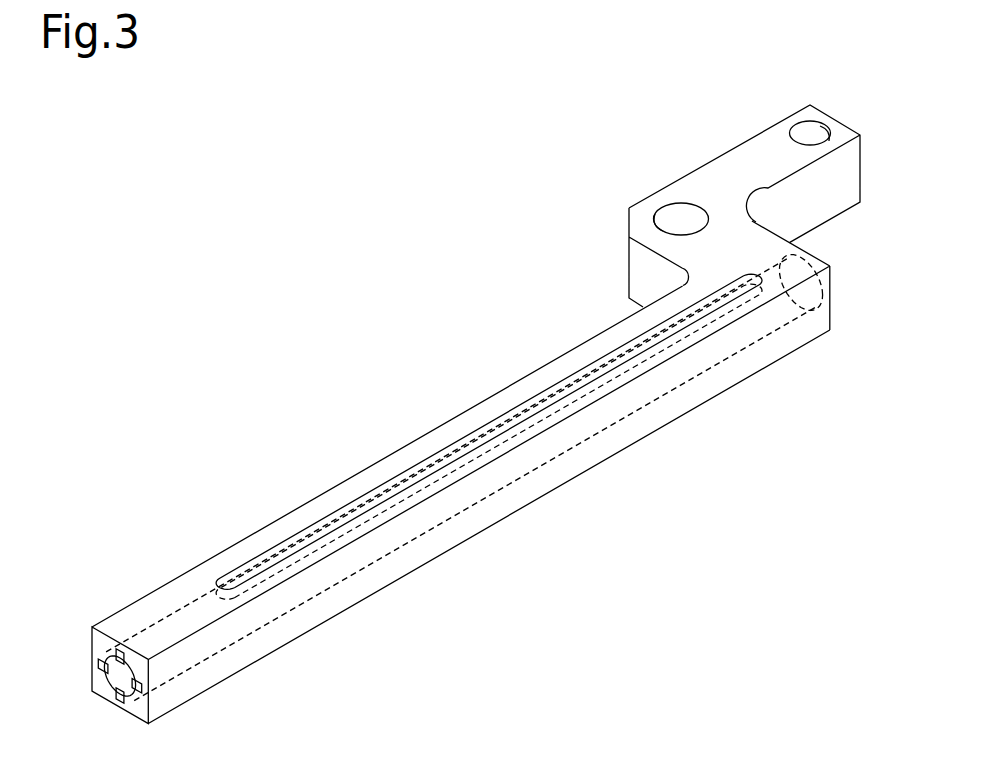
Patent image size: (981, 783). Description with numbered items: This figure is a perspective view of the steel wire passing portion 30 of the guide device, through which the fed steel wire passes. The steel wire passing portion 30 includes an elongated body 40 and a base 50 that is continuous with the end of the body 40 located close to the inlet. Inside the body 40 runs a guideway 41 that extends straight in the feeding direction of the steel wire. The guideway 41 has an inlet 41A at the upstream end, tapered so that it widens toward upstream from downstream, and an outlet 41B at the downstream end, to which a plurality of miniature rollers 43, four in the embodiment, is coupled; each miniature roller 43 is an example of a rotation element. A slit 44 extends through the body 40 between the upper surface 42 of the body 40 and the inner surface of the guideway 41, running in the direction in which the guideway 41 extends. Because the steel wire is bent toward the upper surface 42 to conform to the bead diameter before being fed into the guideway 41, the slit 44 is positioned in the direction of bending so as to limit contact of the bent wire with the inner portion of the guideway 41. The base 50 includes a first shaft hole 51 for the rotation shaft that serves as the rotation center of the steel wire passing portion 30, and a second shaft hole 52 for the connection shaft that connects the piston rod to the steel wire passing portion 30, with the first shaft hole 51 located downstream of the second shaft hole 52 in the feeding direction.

The steel wire passing portion 30 is at (880, 102).
The body 40 is at (528, 488).
The guideway 41 is at (403, 548).
The inlet 41A is at (822, 297).
The outlet 41B is at (101, 680).
The upper surface 42 is at (463, 416).
The miniature roller 43 is at (143, 682).
The slit 44 is at (326, 523).
The base 50 is at (743, 152).
The first shaft hole 51 is at (660, 223).
The second shaft hole 52 is at (831, 130).